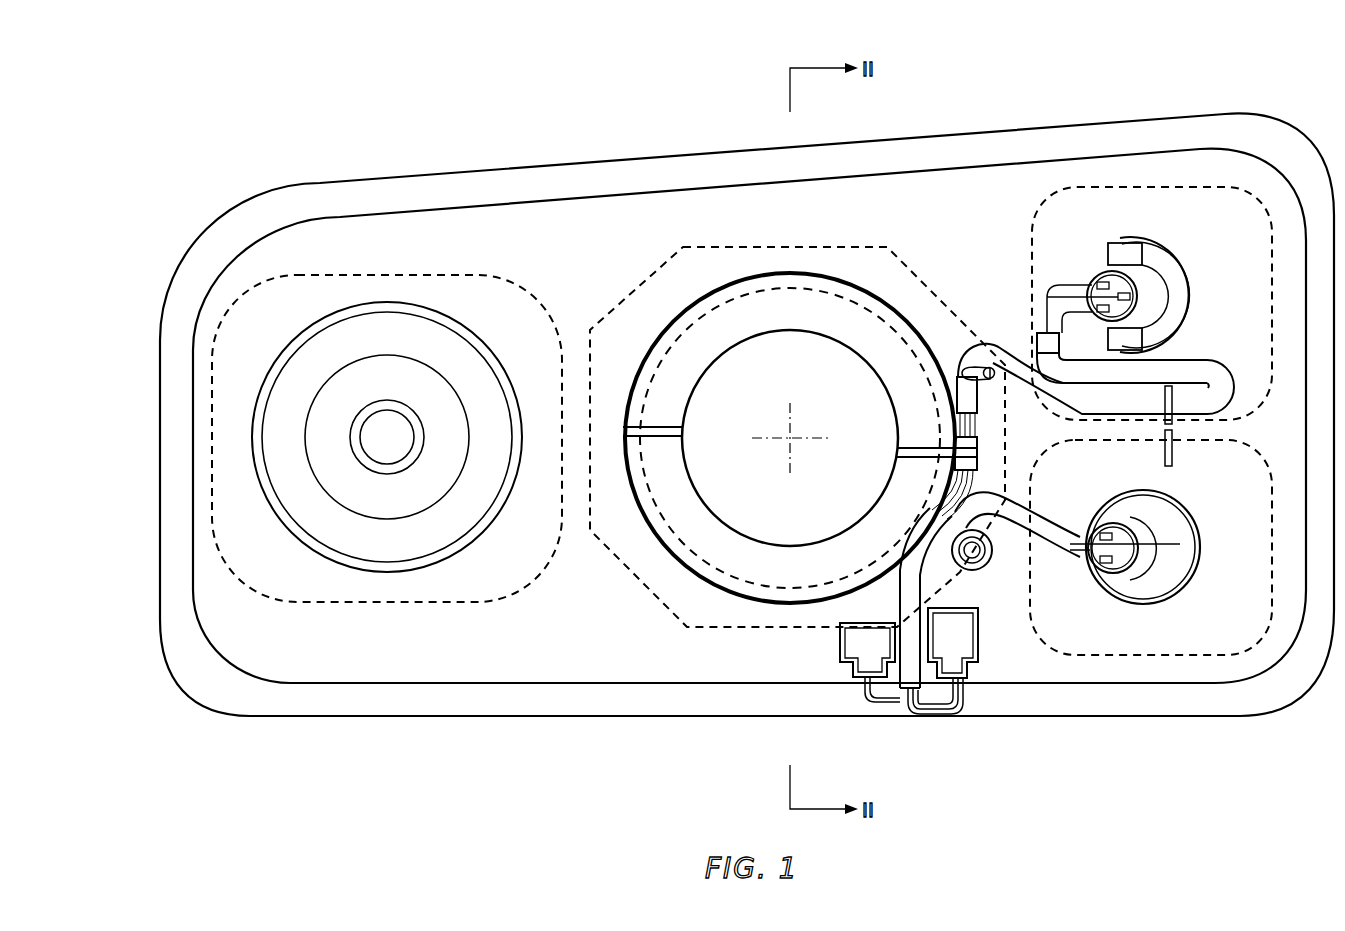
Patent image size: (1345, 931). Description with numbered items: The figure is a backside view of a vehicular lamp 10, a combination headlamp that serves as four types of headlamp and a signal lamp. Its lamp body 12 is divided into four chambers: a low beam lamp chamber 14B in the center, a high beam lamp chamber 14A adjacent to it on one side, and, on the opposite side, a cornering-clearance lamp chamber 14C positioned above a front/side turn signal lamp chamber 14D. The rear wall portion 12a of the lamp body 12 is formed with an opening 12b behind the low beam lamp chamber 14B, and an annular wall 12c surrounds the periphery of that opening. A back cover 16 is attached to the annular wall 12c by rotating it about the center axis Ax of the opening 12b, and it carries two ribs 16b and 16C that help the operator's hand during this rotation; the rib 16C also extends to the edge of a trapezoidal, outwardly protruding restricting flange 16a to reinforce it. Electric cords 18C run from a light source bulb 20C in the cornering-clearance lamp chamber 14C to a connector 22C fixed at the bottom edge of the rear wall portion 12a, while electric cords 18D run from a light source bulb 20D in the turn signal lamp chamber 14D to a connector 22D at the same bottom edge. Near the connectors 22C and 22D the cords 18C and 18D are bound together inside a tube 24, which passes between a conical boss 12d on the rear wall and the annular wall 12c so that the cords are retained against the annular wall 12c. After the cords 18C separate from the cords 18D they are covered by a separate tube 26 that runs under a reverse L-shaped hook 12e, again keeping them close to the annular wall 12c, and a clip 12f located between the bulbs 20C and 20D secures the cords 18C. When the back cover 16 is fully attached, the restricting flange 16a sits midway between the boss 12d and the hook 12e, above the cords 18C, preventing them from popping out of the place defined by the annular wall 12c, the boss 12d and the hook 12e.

The vehicular lamp 10 is at (747, 382).
The lamp body 12 is at (629, 158).
The rear wall portion 12a is at (570, 222).
The opening 12b is at (690, 325).
The annular wall 12c is at (645, 352).
The boss 12d is at (975, 572).
The hook 12e is at (970, 366).
The clip 12f is at (1173, 452).
The high beam lamp chamber 14A is at (331, 234).
The low beam lamp chamber 14B is at (759, 210).
The cornering-clearance lamp chamber 14C is at (1199, 162).
The front/side turn signal lamp chamber 14D is at (1189, 660).
The back cover 16 is at (854, 271).
The restricting flange 16a is at (979, 464).
The rib 16b is at (663, 422).
The rib 16C is at (903, 447).
The electric cords 18C is at (988, 421).
The electric cords 18D is at (1022, 503).
The light source bulb 20C is at (1150, 292).
The light source bulb 20D is at (1150, 570).
The connector 22C is at (840, 652).
The connector 22D is at (980, 650).
The tube 24 is at (910, 555).
The tube 26 is at (1195, 368).
The center axis Ax is at (785, 445).